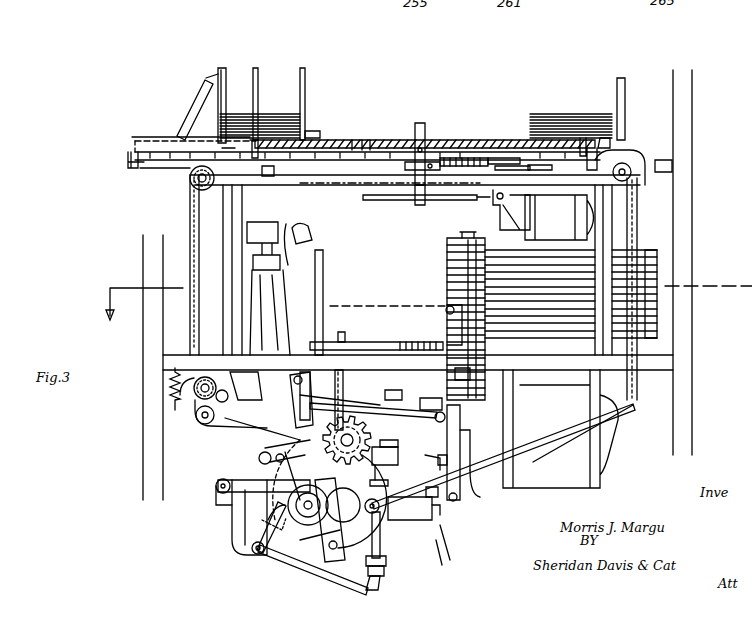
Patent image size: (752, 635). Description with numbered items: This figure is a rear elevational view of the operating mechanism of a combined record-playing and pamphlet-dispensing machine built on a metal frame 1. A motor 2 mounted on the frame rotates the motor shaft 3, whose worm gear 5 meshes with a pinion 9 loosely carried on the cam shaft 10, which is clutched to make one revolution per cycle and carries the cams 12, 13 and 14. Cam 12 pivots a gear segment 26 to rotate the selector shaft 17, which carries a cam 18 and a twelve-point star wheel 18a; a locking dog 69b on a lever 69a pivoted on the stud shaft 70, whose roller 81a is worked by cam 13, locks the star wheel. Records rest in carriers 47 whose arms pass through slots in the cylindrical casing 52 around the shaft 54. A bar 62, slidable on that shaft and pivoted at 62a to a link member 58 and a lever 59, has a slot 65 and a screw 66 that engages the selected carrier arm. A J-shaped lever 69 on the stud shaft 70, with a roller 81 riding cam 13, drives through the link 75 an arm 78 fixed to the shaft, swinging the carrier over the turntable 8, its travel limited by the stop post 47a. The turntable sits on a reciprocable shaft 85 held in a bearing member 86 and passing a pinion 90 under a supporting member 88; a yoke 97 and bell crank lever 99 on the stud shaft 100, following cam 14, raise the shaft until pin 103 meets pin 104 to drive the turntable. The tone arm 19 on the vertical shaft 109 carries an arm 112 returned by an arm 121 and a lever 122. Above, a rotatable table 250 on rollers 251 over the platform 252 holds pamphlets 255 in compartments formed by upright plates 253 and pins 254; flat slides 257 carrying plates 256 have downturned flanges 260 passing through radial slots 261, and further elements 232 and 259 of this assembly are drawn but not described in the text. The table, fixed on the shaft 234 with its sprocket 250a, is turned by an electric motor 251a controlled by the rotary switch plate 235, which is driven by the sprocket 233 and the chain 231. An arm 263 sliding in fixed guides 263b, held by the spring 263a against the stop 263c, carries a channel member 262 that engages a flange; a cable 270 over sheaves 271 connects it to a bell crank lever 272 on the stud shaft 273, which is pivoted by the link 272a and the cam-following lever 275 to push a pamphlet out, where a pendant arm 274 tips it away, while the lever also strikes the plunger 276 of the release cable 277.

The frame 1 is at (438, 528).
The motor 2 is at (560, 429).
The motor shaft 3 is at (433, 463).
The worm gear 5 is at (301, 400).
The turntable 8 is at (412, 341).
The pinion 9 is at (262, 506).
The cam shaft 10 is at (288, 526).
The cam 12 is at (425, 292).
The cam 13 is at (307, 505).
The cam 14 is at (318, 465).
The selector shaft 17 is at (385, 406).
The cam 18 is at (336, 374).
The star wheel 18a is at (350, 372).
The tone arm and sound pick-up 19 is at (313, 232).
The gear segment 26 is at (268, 430).
The record carrier 47 is at (390, 303).
The stop post 47a is at (324, 258).
The cylindrical casing 52 is at (446, 242).
The shaft 54 is at (466, 232).
The link member 58 is at (446, 438).
The lever 59 is at (424, 410).
The bar 62 is at (458, 496).
The pivotal connection 62a is at (503, 486).
The longitudinal slot 65 is at (465, 432).
The screw 66 is at (447, 306).
The J-shaped lever 69 is at (312, 364).
The lever 69a is at (386, 484).
The locking dog 69b is at (275, 458).
The stud shaft 70 is at (325, 578).
The link 75 is at (395, 341).
The arm 78 is at (460, 370).
The roller 81 is at (381, 536).
The roller 81a is at (260, 470).
The reciprocable shaft 85 is at (378, 470).
The bearing member 86 is at (385, 574).
The supporting member 88 is at (398, 386).
The pinion 90 is at (380, 446).
The yoke 97 is at (382, 586).
The bell crank lever 99 is at (300, 556).
The stud shaft 100 is at (252, 550).
The pin 103 is at (387, 560).
The pin 104 is at (395, 460).
The vertical shaft 109 is at (280, 342).
The arm 112 is at (239, 387).
The arm 121 is at (262, 448).
The lever 122 is at (232, 500).
The chain 231 is at (190, 210).
The roller 232 is at (190, 181).
The sprocket 233 is at (432, 162).
The shaft 234 is at (420, 122).
The rotary switch plate 235 is at (453, 157).
The rotatable table 250 is at (357, 139).
The sprocket 250a is at (380, 201).
The rollers 251 is at (266, 176).
The electric motor 251a is at (559, 217).
The platform 252 is at (318, 186).
The upright plates 253 is at (222, 68).
The upright pins 254 is at (303, 70).
The pamphlets 255 is at (113, 133).
The plates 256 is at (330, 138).
The flat slides 257 is at (385, 139).
The block 259 is at (314, 130).
The downturned flanges 260 is at (250, 155).
The radial slots 261 is at (222, 147).
The channel member 262 is at (127, 160).
The arm 263 is at (150, 168).
The spring 263a is at (490, 157).
The fixed guides 263b is at (540, 160).
The stop 263c is at (673, 166).
The cable or chain 270 is at (638, 186).
The sheaves 271 is at (640, 166).
The bell crank lever 272 is at (622, 410).
The link 272a is at (413, 503).
The stud shaft 273 is at (440, 500).
The pendant arm 274 is at (204, 84).
The lever 275 is at (262, 532).
The plunger 276 is at (442, 512).
The release cable 277 is at (441, 550).